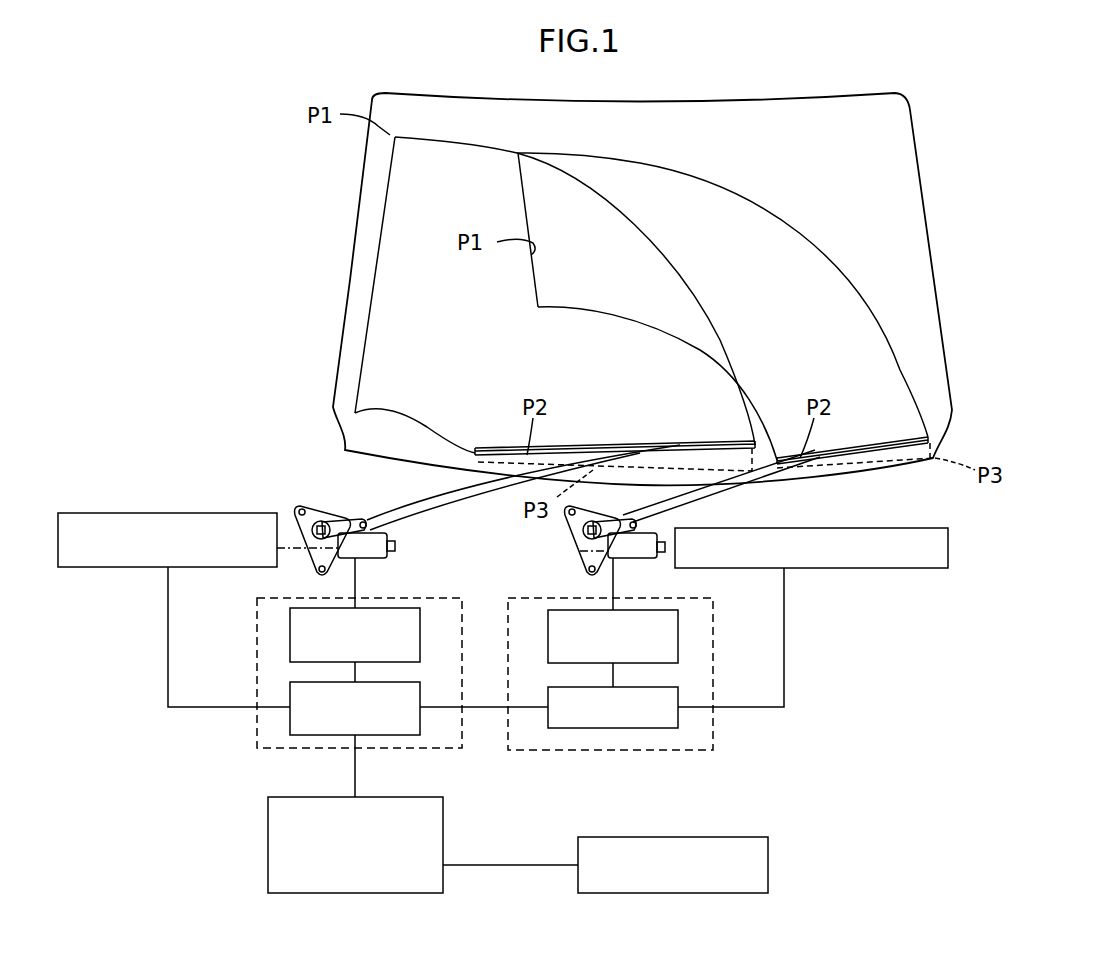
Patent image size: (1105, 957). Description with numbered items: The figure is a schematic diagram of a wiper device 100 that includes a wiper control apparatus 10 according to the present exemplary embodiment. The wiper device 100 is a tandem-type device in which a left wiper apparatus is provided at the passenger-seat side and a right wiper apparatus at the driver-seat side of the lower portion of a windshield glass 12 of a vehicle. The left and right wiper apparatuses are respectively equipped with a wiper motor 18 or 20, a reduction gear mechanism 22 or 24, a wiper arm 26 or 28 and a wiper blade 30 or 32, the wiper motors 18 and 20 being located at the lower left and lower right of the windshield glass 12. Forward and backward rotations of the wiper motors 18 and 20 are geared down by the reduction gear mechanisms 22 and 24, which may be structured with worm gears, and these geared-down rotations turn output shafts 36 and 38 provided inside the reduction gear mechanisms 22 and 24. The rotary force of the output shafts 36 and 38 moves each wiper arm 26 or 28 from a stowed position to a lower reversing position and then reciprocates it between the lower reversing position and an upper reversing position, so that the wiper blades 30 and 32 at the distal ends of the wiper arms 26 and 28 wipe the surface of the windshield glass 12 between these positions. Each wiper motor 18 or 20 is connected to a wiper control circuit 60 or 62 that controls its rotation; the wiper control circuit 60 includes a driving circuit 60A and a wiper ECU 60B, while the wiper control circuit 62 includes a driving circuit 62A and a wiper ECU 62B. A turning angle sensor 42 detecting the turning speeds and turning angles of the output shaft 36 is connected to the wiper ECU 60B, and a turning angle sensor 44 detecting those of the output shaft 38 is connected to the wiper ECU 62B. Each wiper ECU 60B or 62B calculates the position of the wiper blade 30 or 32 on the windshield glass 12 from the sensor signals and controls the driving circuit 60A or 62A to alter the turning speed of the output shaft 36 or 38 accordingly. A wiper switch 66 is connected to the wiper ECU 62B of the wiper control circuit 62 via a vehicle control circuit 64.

The wiper device 100 is at (992, 107).
The wiper control apparatus 10 is at (1005, 613).
The windshield glass 12 is at (627, 103).
The wiper motor 18 is at (634, 558).
The wiper motor 20 is at (381, 558).
The reduction gear mechanism 22 is at (571, 530).
The reduction gear mechanism 24 is at (327, 502).
The wiper arm 26 is at (752, 496).
The wiper arm 28 is at (483, 499).
The wiper blade 30 is at (886, 442).
The wiper blade 32 is at (649, 446).
The output shaft 36 is at (577, 540).
The output shaft 38 is at (323, 508).
The turning angle sensor 42 is at (948, 548).
The turning angle sensor 44 is at (131, 512).
The wiper control circuit 60 is at (638, 703).
The driving circuit 60A is at (678, 632).
The wiper ECU 60B is at (678, 690).
The wiper control circuit 62 is at (325, 703).
The driving circuit 62A is at (290, 636).
The wiper ECU 62B is at (290, 690).
The vehicle control circuit 64 is at (443, 820).
The wiper switch 66 is at (768, 862).